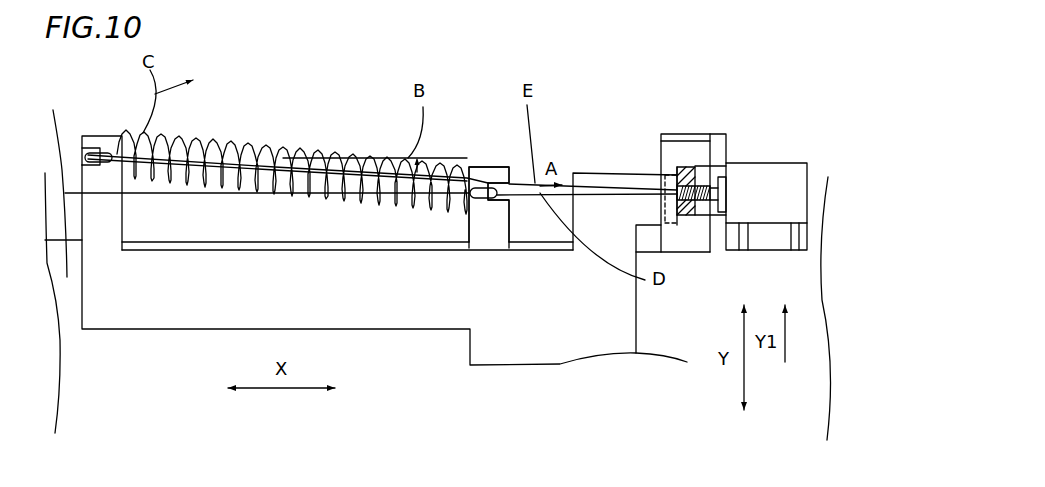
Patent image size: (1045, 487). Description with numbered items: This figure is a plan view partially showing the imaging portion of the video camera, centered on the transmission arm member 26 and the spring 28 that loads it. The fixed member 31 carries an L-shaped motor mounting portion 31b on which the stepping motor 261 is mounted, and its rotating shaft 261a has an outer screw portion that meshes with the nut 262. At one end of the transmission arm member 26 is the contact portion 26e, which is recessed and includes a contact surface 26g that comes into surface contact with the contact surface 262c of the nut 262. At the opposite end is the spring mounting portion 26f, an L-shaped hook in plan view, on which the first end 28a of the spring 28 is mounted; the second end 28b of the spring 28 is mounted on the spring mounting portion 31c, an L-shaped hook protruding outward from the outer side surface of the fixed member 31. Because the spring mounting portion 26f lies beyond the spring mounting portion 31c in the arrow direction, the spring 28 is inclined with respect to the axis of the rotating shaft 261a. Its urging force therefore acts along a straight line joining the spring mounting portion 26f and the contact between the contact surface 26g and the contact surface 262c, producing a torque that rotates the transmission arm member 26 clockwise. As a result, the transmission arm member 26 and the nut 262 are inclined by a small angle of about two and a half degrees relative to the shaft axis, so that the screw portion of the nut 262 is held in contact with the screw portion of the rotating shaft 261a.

The fixed member 31 is at (53, 110).
The first end of the spring 28a is at (85, 156).
The spring mounting portion 26f is at (113, 143).
The spring 28 is at (283, 150).
The second end of the spring 28b is at (478, 187).
The spring mounting portion 31c is at (502, 167).
The transmission arm member 26 is at (585, 180).
The contact portion 26e is at (662, 178).
The motor mounting portion 31b is at (661, 158).
The contact surface of the nut 262c is at (670, 170).
The contact surface 26g is at (698, 175).
The nut 262 is at (722, 178).
The rotating shaft 261a is at (717, 192).
The stepping motor 261 is at (809, 162).